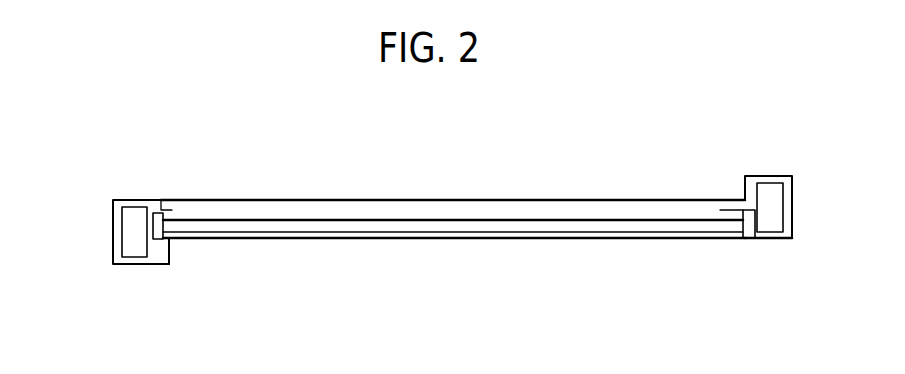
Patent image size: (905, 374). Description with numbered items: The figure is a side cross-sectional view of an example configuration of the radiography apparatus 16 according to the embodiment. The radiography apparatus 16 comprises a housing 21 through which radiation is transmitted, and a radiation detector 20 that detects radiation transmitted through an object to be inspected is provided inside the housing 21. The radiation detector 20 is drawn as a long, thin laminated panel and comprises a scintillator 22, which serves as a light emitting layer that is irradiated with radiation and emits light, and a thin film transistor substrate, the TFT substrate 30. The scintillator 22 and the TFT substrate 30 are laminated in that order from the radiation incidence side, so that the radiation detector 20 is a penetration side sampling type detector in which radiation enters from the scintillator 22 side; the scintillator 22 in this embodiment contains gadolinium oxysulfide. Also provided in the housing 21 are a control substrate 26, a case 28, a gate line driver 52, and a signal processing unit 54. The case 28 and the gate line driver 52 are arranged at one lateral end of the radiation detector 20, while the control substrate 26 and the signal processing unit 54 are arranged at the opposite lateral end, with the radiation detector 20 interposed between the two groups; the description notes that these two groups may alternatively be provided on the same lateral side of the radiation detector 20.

The radiography apparatus 16 is at (659, 180).
The radiation detector 20 is at (683, 300).
The housing 21 is at (780, 240).
The scintillator 22 is at (580, 208).
The control substrate 26 is at (792, 208).
The case 28 is at (113, 225).
The TFT substrate 30 is at (626, 228).
The gate line driver 52 is at (157, 212).
The signal processing unit 54 is at (752, 240).